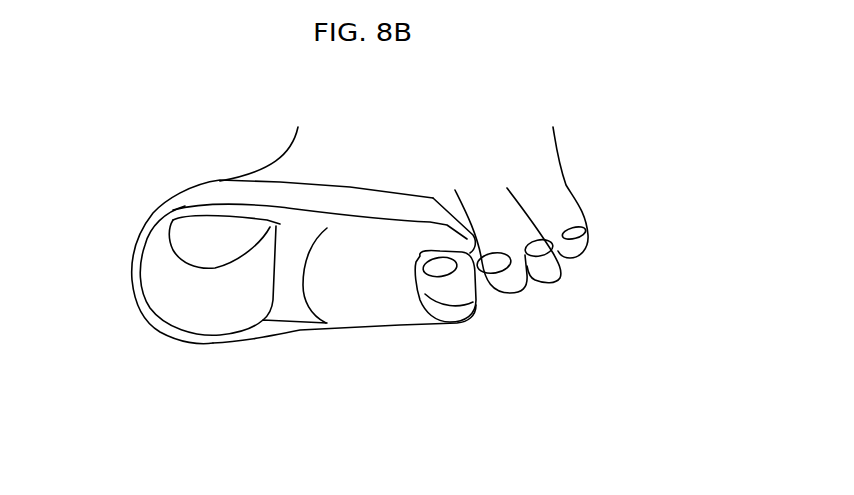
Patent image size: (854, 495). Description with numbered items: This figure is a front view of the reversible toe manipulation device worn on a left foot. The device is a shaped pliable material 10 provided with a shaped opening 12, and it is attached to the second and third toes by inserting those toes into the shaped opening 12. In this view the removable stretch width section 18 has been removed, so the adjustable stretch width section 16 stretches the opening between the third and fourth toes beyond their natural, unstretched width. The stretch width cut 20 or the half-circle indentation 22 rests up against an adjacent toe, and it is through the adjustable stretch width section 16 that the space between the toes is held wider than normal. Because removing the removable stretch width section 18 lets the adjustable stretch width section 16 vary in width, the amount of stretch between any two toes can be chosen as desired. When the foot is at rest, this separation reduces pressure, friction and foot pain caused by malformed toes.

The shaped pliable material 10 is at (170, 212).
The shaped opening 12 is at (272, 320).
The adjustable stretch width section 16 is at (380, 305).
The removable stretch width section 18 is at (440, 292).
The removable stretch cut 20 is at (430, 300).
The half-circle indentation 22 is at (302, 313).